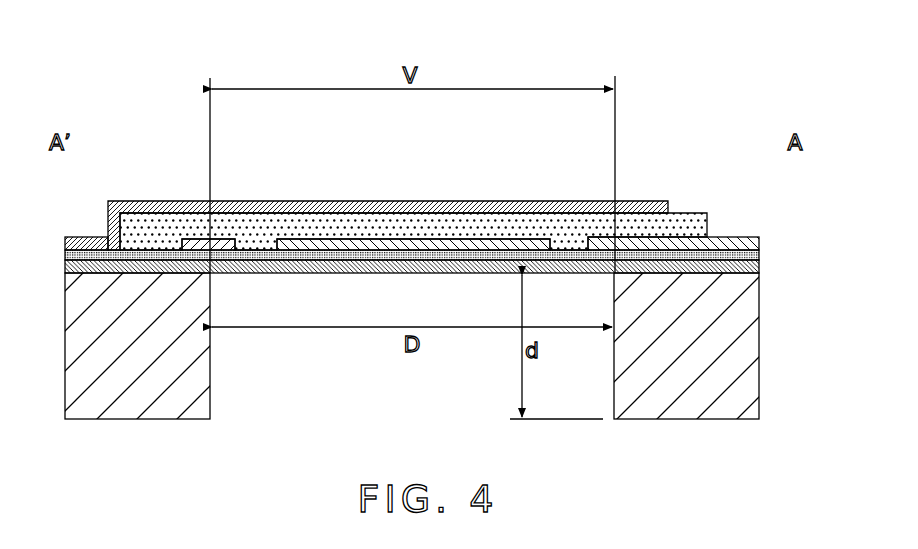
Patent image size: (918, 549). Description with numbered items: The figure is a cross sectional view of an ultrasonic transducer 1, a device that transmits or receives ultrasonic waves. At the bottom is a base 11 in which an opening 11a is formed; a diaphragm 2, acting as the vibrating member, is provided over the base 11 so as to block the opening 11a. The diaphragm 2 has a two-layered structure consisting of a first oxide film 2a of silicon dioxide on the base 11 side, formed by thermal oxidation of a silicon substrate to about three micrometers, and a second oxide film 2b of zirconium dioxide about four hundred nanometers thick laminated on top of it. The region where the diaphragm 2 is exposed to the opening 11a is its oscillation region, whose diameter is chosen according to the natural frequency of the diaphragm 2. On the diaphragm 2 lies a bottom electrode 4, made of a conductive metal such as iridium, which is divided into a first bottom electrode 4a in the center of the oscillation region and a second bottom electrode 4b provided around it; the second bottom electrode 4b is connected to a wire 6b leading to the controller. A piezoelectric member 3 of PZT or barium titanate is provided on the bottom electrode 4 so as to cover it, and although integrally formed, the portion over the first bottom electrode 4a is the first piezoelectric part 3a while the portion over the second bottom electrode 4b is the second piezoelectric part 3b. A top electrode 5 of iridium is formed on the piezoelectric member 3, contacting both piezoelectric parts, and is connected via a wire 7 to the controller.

The ultrasonic transducer 1 is at (704, 61).
The diaphragm 2 is at (455, 270).
The first oxide film 2a is at (759, 268).
The second oxide film 2b is at (759, 254).
The piezoelectric member 3 is at (422, 221).
The first piezoelectric part 3a is at (462, 226).
The second piezoelectric part 3b is at (160, 227).
The bottom electrode 4 is at (410, 178).
The first bottom electrode 4a is at (413, 198).
The second bottom electrode 4b is at (224, 242).
The top electrode 5 is at (414, 208).
The wire 6b is at (738, 237).
The wire 7 is at (87, 237).
The base 11 is at (752, 343).
The opening 11a is at (326, 375).